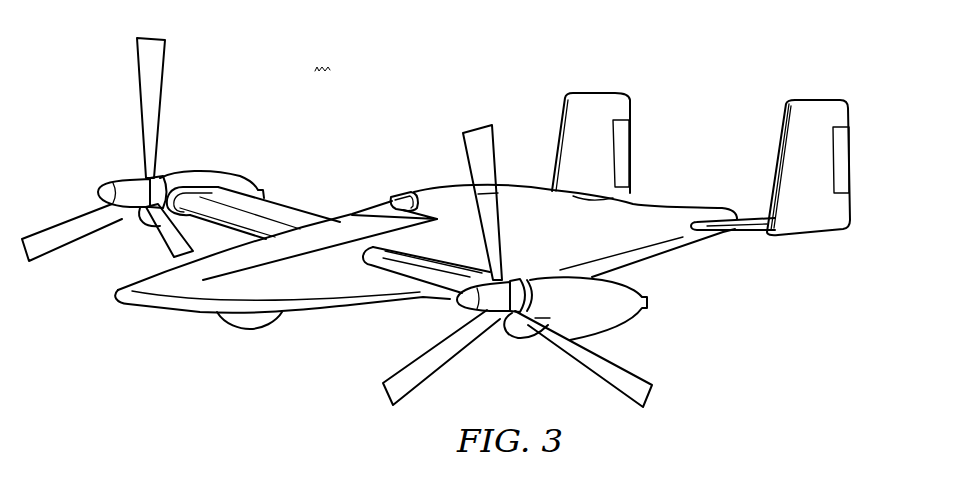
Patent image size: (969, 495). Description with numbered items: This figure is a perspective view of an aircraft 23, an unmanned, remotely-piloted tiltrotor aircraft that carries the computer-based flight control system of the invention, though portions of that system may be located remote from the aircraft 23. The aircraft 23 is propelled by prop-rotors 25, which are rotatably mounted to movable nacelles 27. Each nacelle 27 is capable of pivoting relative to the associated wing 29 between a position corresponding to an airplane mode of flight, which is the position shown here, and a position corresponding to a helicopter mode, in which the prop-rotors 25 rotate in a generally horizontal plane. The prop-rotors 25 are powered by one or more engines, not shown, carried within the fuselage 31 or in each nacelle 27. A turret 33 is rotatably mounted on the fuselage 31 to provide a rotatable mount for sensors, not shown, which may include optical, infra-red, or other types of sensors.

The aircraft 23 is at (436, 203).
The prop-rotors 25 is at (457, 302).
The nacelles 27 is at (648, 309).
The wing 29 is at (284, 210).
The fuselage 31 is at (428, 191).
The turret 33 is at (250, 330).